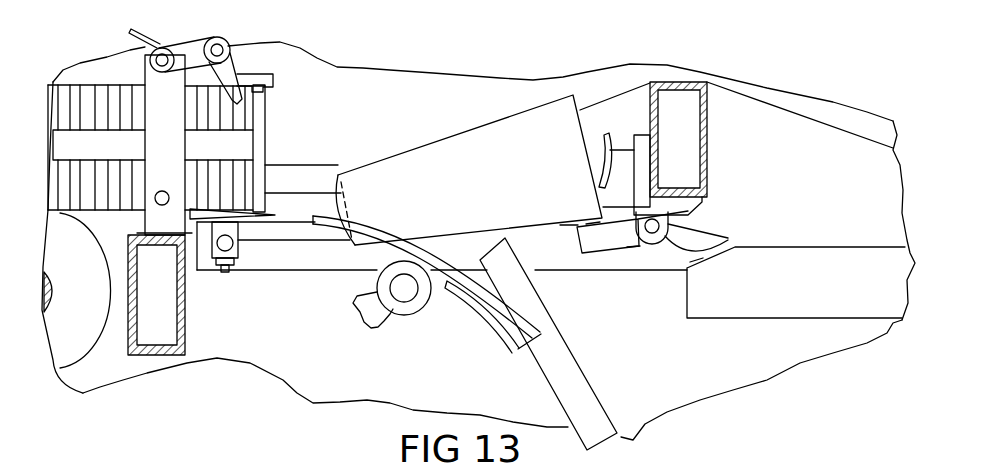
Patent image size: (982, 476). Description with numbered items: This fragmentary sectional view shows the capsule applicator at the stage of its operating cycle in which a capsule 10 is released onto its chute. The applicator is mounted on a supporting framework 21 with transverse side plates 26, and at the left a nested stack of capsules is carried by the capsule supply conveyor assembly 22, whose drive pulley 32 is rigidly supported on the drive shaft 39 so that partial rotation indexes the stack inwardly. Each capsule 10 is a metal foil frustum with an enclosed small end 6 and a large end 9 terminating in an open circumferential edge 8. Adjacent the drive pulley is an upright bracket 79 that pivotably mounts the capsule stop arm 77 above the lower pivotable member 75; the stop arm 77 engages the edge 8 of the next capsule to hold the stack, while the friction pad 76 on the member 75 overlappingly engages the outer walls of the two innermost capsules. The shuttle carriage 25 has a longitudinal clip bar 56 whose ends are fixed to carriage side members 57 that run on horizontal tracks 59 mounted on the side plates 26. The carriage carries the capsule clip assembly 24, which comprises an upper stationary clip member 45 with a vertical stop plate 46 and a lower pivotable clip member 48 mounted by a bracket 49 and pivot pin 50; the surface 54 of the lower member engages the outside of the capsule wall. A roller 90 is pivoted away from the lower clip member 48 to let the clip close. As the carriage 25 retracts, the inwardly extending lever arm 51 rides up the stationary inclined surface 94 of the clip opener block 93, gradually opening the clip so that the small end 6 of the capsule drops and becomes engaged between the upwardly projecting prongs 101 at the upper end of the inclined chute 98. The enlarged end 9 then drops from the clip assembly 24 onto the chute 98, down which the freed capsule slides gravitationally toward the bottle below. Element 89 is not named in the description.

The small end 6 is at (343, 172).
The open circumferential edge 8 is at (266, 113).
The large end 9 is at (208, 115).
The capsule 10 is at (268, 97).
The supporting framework 21 is at (768, 385).
The capsule supply conveyor assembly 22 is at (77, 368).
The capsule clip assembly 24 is at (628, 248).
The shuttle carriage 25 is at (814, 118).
The side plate 26 is at (448, 80).
The drive pulley 32 is at (72, 297).
The drive shaft 39 is at (47, 274).
The upper stationary clip member 45 is at (620, 177).
The vertical stop plate 46 is at (601, 165).
The lower pivotable clip member 48 is at (606, 242).
The bracket 49 is at (668, 221).
The pivot pin 50 is at (662, 233).
The lever arm 51 is at (723, 241).
The surface 54 is at (587, 224).
The clip bar 56 is at (707, 160).
The carriage side member 57 is at (742, 107).
The track 59 is at (325, 262).
The lower pivotable member 75 is at (247, 222).
The friction pad 76 is at (275, 215).
The capsule stop arm 77 is at (258, 76).
The upright bracket 79 is at (147, 70).
The roller bracket 89 is at (385, 326).
The roller 90 is at (403, 310).
The clip opener block 93 is at (775, 318).
The inclined surface 94 is at (697, 261).
The chute 98 is at (608, 378).
The prong 101 is at (377, 230).